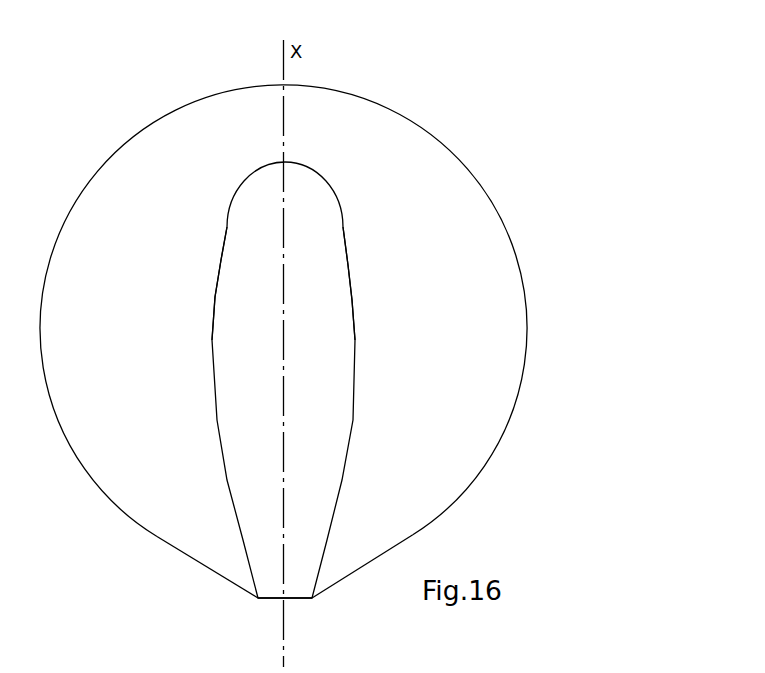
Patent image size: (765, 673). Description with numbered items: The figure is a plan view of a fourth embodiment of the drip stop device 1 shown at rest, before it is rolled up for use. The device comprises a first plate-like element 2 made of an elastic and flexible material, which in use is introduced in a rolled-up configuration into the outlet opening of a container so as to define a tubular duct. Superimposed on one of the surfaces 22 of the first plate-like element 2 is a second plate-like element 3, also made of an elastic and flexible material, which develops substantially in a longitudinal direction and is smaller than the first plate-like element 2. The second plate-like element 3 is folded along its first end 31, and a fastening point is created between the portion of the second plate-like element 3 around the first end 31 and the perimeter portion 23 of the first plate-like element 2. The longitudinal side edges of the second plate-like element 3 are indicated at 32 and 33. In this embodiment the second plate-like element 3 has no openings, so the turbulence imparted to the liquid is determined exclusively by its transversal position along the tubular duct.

The drip stop device 1 is at (588, 125).
The first plate-like element 2 is at (487, 282).
The surface 22 is at (421, 469).
The perimeter portion 23 is at (238, 581).
The second plate-like element 3 is at (252, 233).
The first end 31 is at (277, 607).
The handle left edge 32 is at (215, 297).
The handle right edge 33 is at (348, 265).